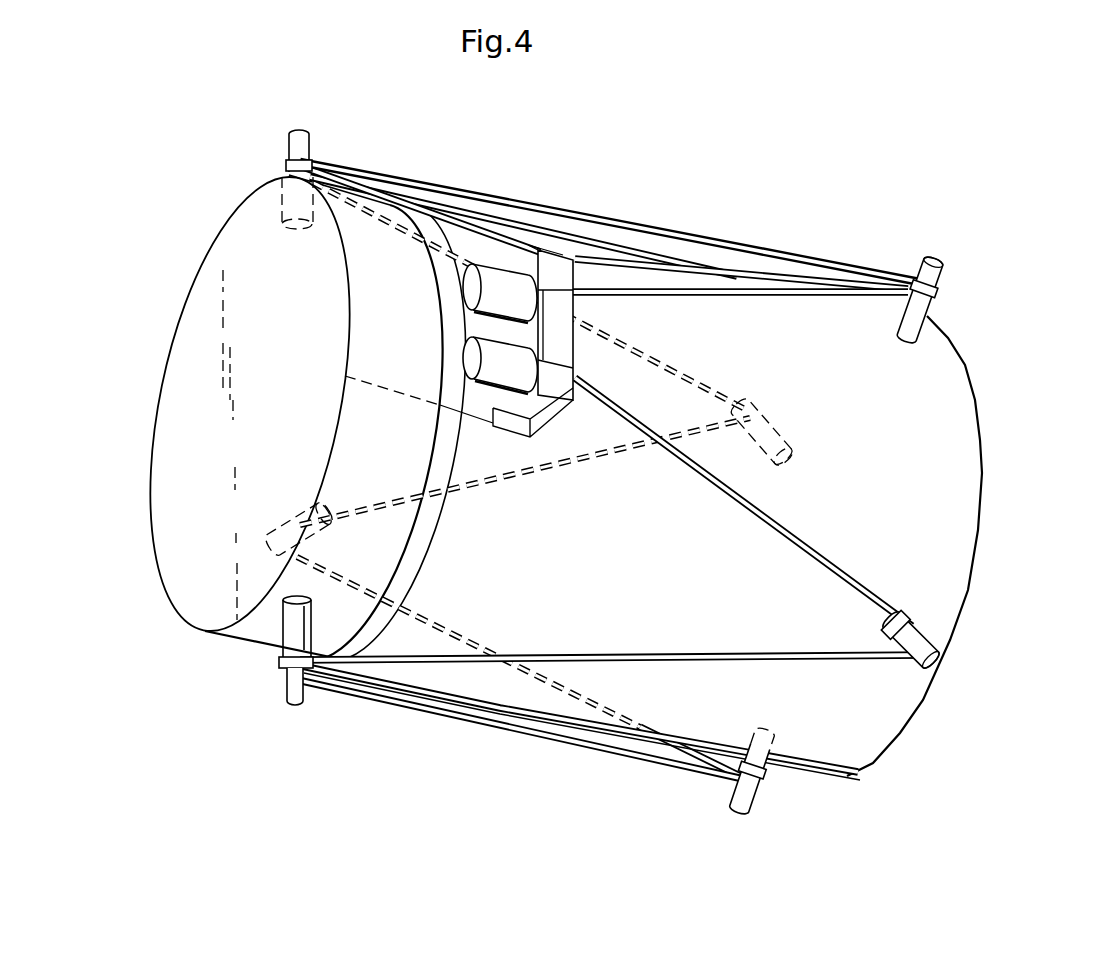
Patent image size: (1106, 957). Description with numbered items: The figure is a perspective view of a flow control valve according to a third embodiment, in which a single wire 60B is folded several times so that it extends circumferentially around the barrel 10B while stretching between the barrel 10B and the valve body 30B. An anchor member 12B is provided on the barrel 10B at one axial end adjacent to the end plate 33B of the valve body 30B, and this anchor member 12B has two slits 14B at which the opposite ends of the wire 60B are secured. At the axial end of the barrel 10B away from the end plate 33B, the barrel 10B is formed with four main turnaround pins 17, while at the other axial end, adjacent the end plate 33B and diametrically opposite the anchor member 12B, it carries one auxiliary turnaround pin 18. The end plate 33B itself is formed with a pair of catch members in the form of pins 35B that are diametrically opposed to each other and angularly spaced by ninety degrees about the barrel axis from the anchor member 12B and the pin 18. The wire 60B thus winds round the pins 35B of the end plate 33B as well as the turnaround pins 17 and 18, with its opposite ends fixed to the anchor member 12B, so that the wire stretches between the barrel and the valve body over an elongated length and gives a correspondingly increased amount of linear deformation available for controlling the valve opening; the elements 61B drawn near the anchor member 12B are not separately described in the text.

The barrel 10B is at (982, 467).
The anchor member 12B is at (554, 255).
The slits 14B is at (558, 352).
The main turnaround pins 17 is at (932, 296).
The auxiliary turnaround pin 18 is at (288, 541).
The valve body 30B is at (183, 629).
The end plate 33B is at (160, 504).
The pins 35B is at (301, 130).
The wire 60B is at (797, 255).
The cylindrical supports 61B is at (502, 352).